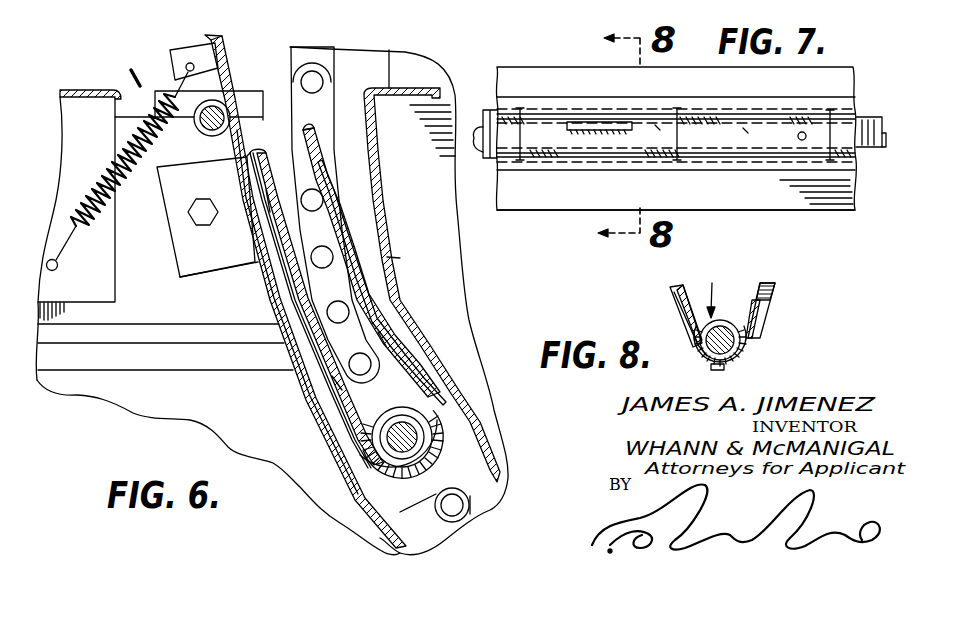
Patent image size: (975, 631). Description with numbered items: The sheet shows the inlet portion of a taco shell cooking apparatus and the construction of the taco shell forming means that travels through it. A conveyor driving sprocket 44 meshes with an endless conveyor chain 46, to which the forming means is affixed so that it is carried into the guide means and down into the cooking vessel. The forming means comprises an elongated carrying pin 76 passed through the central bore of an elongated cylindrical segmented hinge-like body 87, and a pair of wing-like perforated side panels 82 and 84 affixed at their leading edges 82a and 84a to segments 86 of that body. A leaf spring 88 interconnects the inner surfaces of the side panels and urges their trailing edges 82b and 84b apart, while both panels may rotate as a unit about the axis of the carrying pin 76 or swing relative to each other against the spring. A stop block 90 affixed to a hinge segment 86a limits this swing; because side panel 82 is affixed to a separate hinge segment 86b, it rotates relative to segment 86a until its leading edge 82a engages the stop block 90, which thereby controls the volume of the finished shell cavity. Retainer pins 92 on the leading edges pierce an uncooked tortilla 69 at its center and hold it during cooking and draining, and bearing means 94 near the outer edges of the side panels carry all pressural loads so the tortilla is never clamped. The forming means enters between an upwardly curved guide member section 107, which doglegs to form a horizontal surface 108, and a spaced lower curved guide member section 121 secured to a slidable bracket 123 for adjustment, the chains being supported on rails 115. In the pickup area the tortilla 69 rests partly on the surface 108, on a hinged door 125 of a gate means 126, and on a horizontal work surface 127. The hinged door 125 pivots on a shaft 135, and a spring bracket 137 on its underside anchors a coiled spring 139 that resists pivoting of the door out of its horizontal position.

In FIG. 6, the conveyor driving sprocket 44 is at (370, 70).
In FIG. 6, the conveyor chain 46 is at (320, 58).
In FIG. 6, the tortilla 69 is at (337, 380).
In FIG. 6, the carrying pin 76 is at (405, 430).
In FIG. 7, the carrying pin 76 is at (883, 148).
In FIG. 8, the carrying pin 76 is at (722, 328).
In FIG. 6, the side panel 82 is at (392, 420).
In FIG. 7, the side panel 82 is at (570, 80).
In FIG. 8, the side panel 82 is at (672, 297).
In FIG. 6, the leading edge of side panel 82a is at (372, 462).
In FIG. 8, the leading edge of side panel 82a is at (702, 355).
In FIG. 6, the trailing edge of side panel 82b is at (262, 147).
In FIG. 6, the side panel 84 is at (345, 220).
In FIG. 7, the side panel 84 is at (558, 195).
In FIG. 8, the side panel 84 is at (770, 287).
In FIG. 6, the leading edge of side panel 84a is at (433, 437).
In FIG. 8, the leading edge of side panel 84a is at (746, 350).
In FIG. 6, the trailing edge of side panel 84b is at (312, 148).
In FIG. 7, the hinge body segment 86 is at (700, 146).
In FIG. 7, the hinge segment 86a is at (657, 127).
In FIG. 7, the hinge segment 86b is at (745, 130).
In FIG. 7, the hinge-like body 87 is at (868, 116).
In FIG. 8, the hinge-like body 87 is at (710, 290).
In FIG. 6, the leaf spring 88 is at (380, 337).
In FIG. 7, the stop block 90 is at (600, 122).
In FIG. 8, the stop block 90 is at (724, 368).
In FIG. 6, the retainer pin 92 is at (470, 504).
In FIG. 7, the retainer pin 92 is at (802, 140).
In FIG. 6, the bearing means 94 is at (268, 192).
In FIG. 8, the bearing means 94 is at (678, 315).
In FIG. 6, the curved guide member section 107 is at (387, 257).
In FIG. 6, the horizontal surface 108 is at (412, 88).
In FIG. 6, the rail 115 is at (192, 6).
In FIG. 6, the lower curved guide member section 121 is at (316, 415).
In FIG. 6, the bracket 123 is at (213, 270).
In FIG. 6, the hinged door 125 is at (232, 82).
In FIG. 6, the gate means 126 is at (119, 66).
In FIG. 6, the horizontal work surface 127 is at (80, 92).
In FIG. 6, the shaft 135 is at (206, 125).
In FIG. 6, the spring bracket 137 is at (180, 55).
In FIG. 6, the coiled spring 139 is at (98, 218).